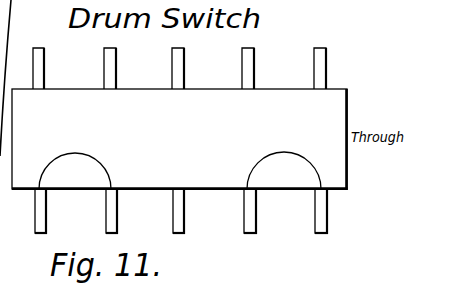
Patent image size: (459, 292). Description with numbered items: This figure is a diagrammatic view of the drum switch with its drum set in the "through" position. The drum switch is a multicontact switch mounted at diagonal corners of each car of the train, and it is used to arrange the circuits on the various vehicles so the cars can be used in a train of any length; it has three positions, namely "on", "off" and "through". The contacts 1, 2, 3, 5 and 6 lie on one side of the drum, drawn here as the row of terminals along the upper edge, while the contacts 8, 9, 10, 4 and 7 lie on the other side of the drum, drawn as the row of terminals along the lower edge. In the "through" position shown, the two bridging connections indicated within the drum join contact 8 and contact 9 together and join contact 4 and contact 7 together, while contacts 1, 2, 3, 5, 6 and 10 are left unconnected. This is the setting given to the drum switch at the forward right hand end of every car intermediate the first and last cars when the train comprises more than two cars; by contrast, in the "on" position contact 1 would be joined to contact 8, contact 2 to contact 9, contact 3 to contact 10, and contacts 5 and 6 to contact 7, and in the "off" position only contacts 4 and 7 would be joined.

The contact 1 is at (46, 66).
The contact 2 is at (117, 67).
The contact 3 is at (185, 66).
The contact 4 is at (243, 212).
The contact 5 is at (328, 66).
The contact 6 is at (255, 66).
The contact 7 is at (316, 212).
The contact 8 is at (33, 213).
The contact 9 is at (104, 213).
The contact 10 is at (170, 212).